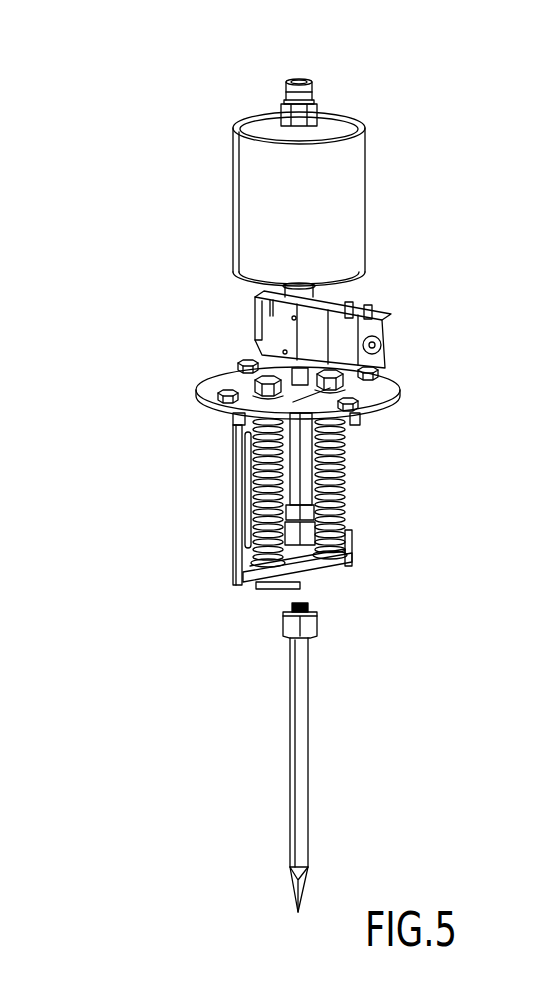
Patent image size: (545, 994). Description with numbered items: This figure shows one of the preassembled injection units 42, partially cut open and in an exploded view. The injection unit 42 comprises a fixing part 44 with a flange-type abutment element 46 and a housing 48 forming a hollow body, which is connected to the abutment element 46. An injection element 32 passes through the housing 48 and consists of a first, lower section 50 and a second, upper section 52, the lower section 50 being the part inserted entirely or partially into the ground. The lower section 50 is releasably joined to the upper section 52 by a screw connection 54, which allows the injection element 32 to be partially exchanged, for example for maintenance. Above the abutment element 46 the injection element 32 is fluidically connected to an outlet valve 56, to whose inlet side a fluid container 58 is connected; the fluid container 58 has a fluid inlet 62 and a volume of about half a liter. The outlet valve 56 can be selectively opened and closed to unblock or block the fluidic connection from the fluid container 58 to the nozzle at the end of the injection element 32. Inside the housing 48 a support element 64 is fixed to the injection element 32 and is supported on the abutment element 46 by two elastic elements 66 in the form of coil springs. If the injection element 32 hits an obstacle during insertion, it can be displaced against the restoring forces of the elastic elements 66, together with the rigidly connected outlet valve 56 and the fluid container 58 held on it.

The injection unit 42 is at (405, 127).
The fluid inlet 62 is at (313, 90).
The fluid container 58 is at (356, 198).
The outlet valve 56 is at (277, 333).
The abutment element 46 is at (382, 395).
The fixing part 44 is at (212, 457).
The housing 48 is at (242, 487).
The upper section 52 is at (300, 457).
The elastic elements 66 is at (252, 522).
The support element 64 is at (292, 567).
The injection element 32 is at (342, 672).
The screw connection 54 is at (343, 596).
The lower section 50 is at (300, 760).